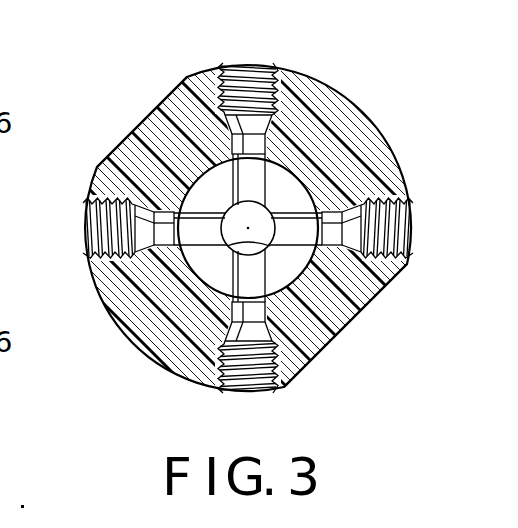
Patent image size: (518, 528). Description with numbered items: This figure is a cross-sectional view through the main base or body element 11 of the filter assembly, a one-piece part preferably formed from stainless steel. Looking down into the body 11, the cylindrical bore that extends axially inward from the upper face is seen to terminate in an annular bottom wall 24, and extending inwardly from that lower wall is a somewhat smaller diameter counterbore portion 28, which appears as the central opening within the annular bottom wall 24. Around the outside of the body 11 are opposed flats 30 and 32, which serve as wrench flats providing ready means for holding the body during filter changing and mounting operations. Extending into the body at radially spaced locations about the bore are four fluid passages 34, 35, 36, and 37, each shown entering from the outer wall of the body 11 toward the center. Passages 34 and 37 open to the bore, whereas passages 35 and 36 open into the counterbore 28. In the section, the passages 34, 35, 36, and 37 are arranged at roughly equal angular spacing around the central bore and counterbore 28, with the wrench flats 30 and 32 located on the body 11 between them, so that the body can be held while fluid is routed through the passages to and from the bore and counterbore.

The main base or body element 11 is at (362, 93).
The annular bottom wall 24 is at (195, 248).
The counterbore portion 28 is at (268, 245).
The flat 30 is at (336, 333).
The flat 32 is at (162, 102).
The fluid passage 34 is at (234, 399).
The fluid passage 35 is at (420, 212).
The fluid passage 36 is at (256, 50).
The fluid passage 37 is at (72, 227).